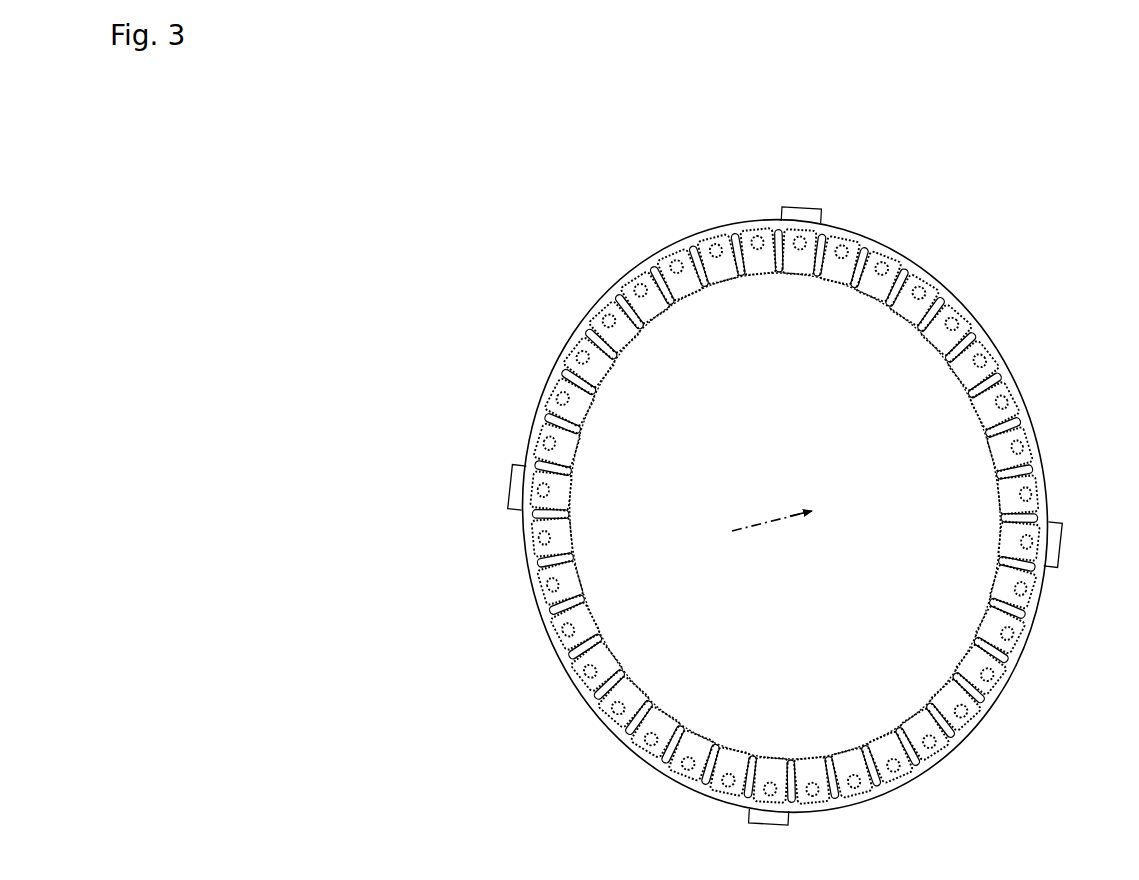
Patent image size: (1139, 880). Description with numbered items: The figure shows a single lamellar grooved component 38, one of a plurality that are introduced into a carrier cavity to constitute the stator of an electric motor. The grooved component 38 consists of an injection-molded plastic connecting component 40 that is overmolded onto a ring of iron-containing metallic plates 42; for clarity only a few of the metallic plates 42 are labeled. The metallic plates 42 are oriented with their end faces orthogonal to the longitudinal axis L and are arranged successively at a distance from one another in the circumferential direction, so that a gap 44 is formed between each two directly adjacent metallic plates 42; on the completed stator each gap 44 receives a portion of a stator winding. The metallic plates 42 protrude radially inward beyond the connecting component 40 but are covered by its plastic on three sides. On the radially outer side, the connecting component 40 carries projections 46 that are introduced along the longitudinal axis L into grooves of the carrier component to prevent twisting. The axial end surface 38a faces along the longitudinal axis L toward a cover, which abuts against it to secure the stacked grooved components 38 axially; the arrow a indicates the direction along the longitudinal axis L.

The lamellar grooved component 38 is at (466, 221).
The surface 38a is at (1052, 486).
The connecting component 40 is at (974, 327).
The metallic plates 42 is at (687, 300).
The gap 44 is at (777, 273).
The projections 46 is at (800, 213).
The longitudinal axis L is at (755, 525).
The axial direction a is at (792, 518).